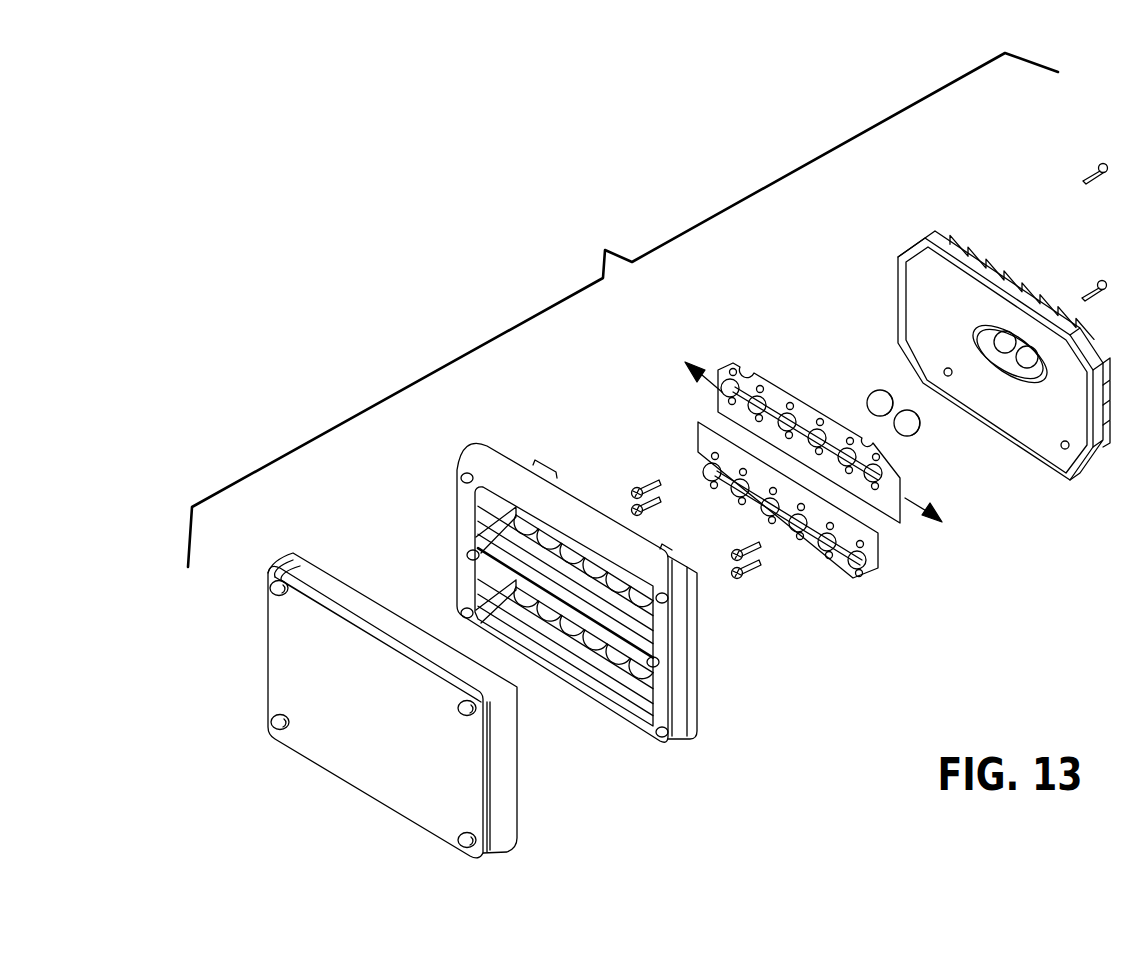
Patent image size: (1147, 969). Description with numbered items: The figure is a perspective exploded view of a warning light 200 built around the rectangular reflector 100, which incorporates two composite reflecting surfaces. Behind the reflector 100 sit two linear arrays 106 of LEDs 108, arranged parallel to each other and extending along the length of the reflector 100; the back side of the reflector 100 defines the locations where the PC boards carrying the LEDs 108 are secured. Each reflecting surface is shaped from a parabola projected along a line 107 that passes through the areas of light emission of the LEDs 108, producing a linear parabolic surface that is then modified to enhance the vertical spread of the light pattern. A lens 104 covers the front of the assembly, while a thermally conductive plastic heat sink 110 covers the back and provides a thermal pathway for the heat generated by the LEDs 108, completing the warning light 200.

The reflector 100 is at (718, 697).
The lens 104 is at (507, 803).
The linear array 106 is at (900, 478).
The line 107 is at (703, 372).
The LED 108 is at (728, 392).
The heat sink 110 is at (1070, 462).
The warning light 200 is at (623, 310).